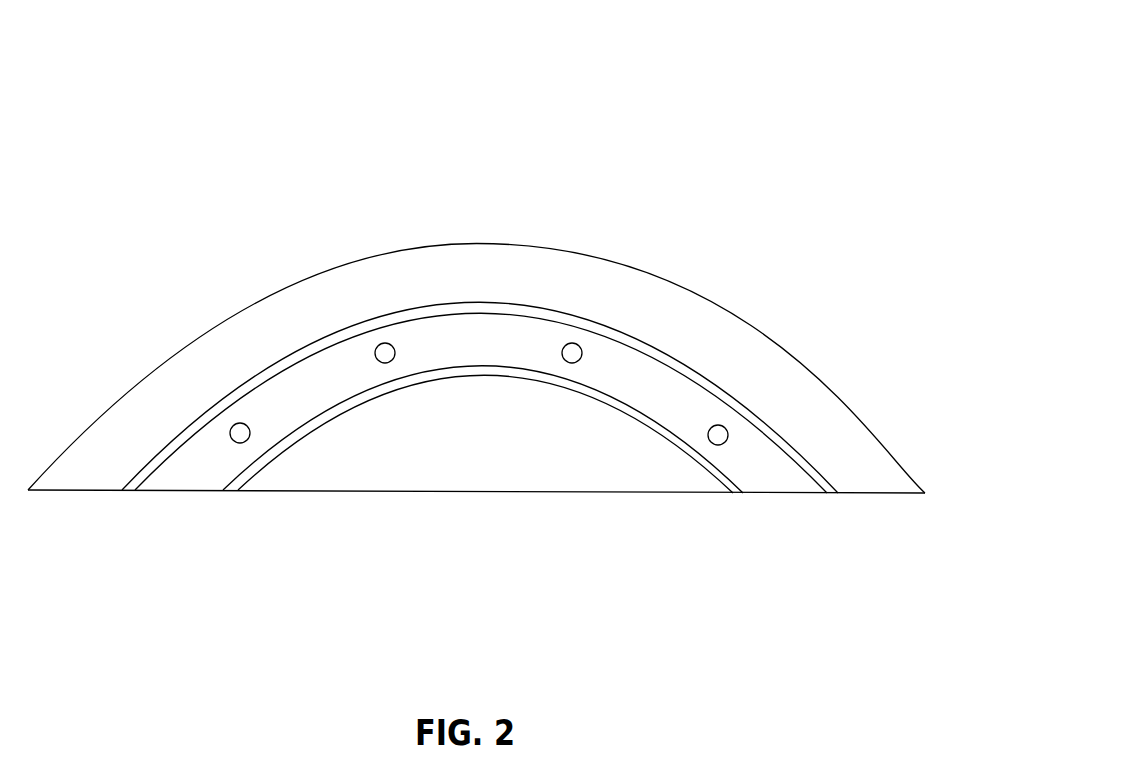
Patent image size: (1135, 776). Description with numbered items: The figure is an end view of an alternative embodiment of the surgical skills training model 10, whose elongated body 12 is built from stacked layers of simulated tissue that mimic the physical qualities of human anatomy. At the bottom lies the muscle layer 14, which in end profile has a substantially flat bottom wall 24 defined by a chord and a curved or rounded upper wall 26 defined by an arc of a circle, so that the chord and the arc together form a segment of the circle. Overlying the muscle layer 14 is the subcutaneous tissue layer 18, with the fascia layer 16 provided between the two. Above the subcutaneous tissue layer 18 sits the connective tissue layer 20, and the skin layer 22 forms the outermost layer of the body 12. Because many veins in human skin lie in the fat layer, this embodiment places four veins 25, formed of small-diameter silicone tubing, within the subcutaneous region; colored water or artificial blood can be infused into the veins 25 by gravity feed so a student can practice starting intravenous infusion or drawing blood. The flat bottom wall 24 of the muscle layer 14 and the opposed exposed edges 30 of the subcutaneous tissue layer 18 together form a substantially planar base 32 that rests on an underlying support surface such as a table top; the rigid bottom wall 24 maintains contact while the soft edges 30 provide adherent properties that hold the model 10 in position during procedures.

The surgical skills training model 10 is at (647, 127).
The elongated body 12 is at (695, 566).
The muscle layer 14 is at (568, 462).
The fascia layer 16 is at (227, 485).
The subcutaneous tissue layer 18 is at (192, 470).
The connective tissue layer 20 is at (130, 470).
The skin layer 22 is at (97, 470).
The bottom wall 24 is at (395, 493).
The veins 25 is at (237, 426).
The upper wall 26 is at (480, 373).
The opposed exposed edges 30 is at (165, 492).
The planar base 32 is at (503, 614).